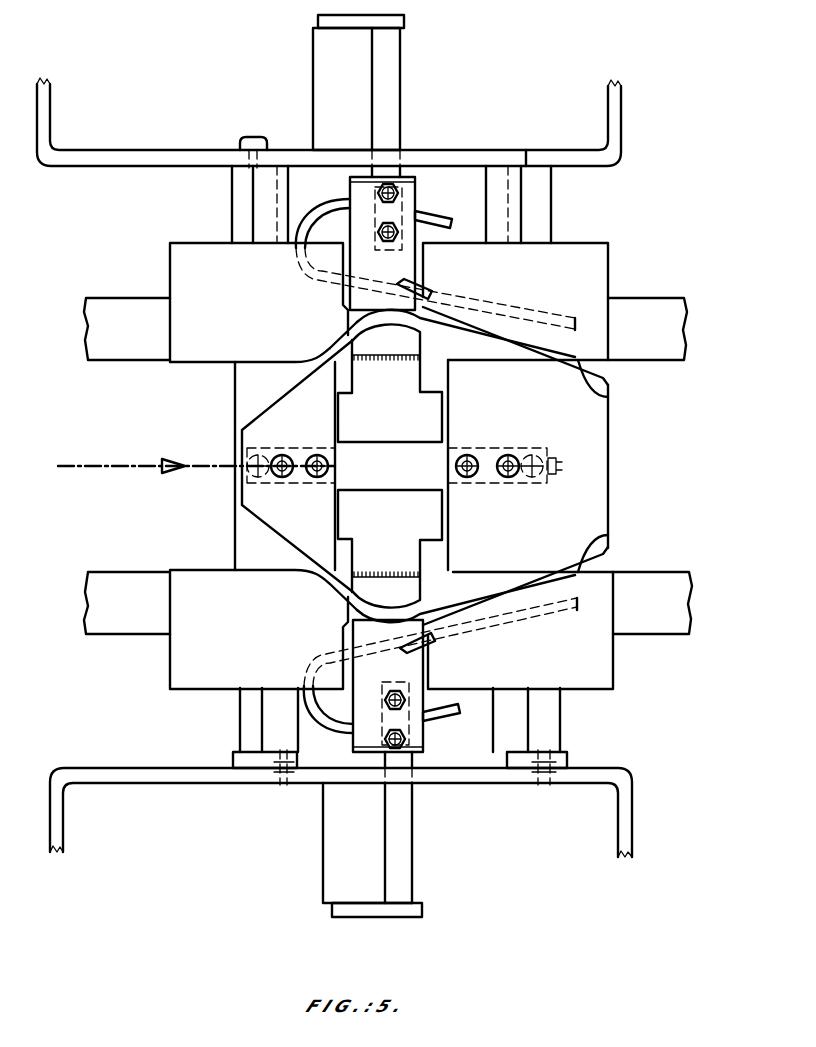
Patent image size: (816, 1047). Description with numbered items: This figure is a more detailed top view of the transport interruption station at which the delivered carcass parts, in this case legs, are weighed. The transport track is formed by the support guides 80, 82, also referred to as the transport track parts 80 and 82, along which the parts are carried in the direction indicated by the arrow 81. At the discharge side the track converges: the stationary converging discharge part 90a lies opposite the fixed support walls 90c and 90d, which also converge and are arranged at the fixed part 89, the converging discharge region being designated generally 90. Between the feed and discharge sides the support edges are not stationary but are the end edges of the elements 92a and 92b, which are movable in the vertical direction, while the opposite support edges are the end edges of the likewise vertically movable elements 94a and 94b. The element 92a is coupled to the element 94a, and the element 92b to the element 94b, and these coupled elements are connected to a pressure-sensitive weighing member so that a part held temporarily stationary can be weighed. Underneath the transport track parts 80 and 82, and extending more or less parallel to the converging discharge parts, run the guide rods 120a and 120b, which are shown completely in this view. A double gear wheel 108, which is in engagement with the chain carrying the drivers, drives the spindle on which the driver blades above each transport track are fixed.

The support guide 80 is at (659, 304).
The workpiece feed direction 81 is at (110, 466).
The support guide 82 is at (677, 623).
The fixed part 89 is at (606, 434).
The leaf spring 90 is at (580, 578).
The converging discharge part 90a is at (578, 358).
The fixed support wall 90c is at (596, 396).
The fixed support wall 90d is at (566, 560).
The vertically movable element 92a is at (413, 197).
The vertically movable element 92b is at (405, 832).
The vertically movable element 94a is at (408, 345).
The vertically movable element 94b is at (420, 588).
The double gear wheel 108 is at (546, 474).
The guide rod 120a is at (558, 318).
The guide rod 120b is at (544, 607).